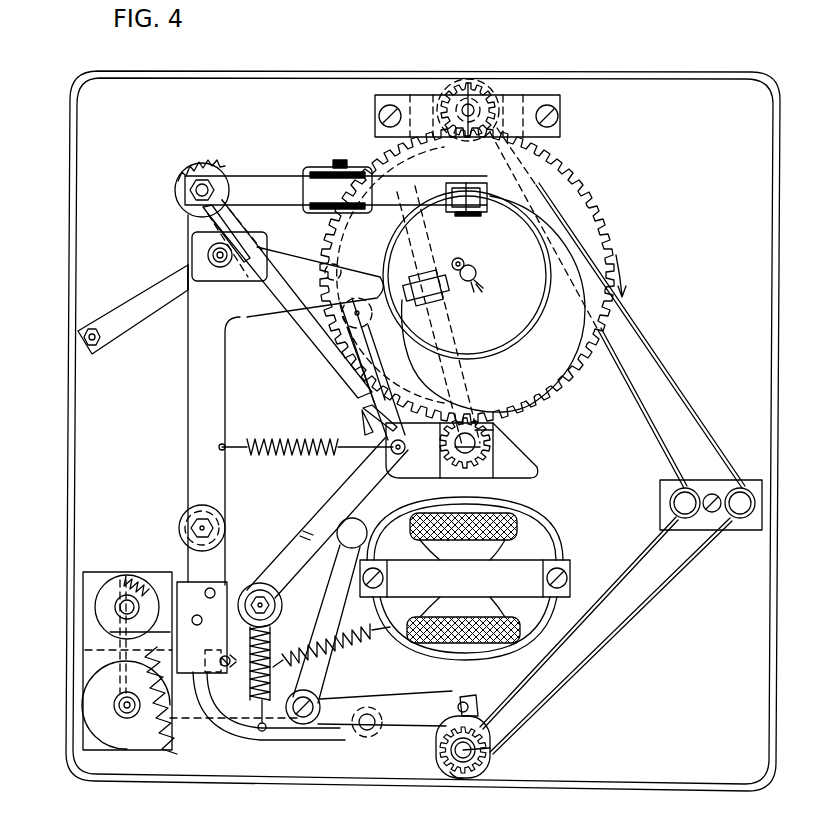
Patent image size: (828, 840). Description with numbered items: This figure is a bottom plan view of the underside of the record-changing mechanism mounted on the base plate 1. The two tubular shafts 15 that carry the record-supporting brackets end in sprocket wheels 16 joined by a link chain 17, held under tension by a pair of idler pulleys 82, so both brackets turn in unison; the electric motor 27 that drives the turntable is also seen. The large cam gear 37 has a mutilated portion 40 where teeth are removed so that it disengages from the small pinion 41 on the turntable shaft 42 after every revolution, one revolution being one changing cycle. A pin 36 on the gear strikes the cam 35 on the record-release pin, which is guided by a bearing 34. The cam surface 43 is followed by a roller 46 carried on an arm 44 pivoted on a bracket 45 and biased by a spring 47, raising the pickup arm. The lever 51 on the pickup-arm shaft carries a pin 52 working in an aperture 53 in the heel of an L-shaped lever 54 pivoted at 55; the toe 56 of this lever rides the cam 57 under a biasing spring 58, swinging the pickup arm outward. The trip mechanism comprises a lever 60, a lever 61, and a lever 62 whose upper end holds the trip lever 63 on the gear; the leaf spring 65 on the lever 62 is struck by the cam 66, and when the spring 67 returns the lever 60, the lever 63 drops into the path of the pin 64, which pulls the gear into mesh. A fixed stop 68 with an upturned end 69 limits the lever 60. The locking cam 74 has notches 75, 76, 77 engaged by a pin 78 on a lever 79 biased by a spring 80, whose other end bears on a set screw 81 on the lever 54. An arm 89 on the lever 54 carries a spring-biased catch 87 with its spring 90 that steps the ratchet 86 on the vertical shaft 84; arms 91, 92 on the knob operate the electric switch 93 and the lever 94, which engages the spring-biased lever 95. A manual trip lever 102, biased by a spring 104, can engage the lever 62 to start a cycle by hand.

The base plate 1 is at (612, 787).
The tubular shaft 15 is at (478, 757).
The sprocket wheel 16 is at (472, 85).
The link chain 17 is at (590, 656).
The electric motor 27 is at (540, 535).
The bearing 34 is at (540, 95).
The cam 35 is at (452, 88).
The pin 36 is at (325, 250).
The cam gear 37 is at (585, 182).
The mutilated portion 40 is at (482, 422).
The pinion 41 is at (493, 430).
The shaft 42 is at (480, 447).
The cam surface 43 is at (518, 212).
The arm 44 is at (252, 178).
The bracket 45 is at (300, 176).
The roller 46 is at (455, 183).
The spring 47 is at (338, 160).
The lever 51 is at (212, 226).
The pin 52 is at (238, 250).
The aperture 53 is at (205, 265).
The L-shaped lever 54 is at (190, 405).
The pivot 55 is at (190, 520).
The toe 56 is at (370, 282).
The cam 57 is at (362, 398).
The biasing spring 58 is at (296, 440).
The lever 60 is at (235, 318).
The lever 61 is at (325, 350).
The lever 62 is at (350, 372).
The trip lever 63 is at (472, 290).
The pin 64 is at (530, 478).
The leaf spring 65 is at (395, 458).
The cam 66 is at (440, 408).
The spring 67 is at (215, 162).
The fixed stop 68 is at (140, 300).
The upturned end 69 is at (183, 293).
The locking cam 74 is at (455, 778).
The notch 75 is at (478, 720).
The notch 76 is at (438, 748).
The notch 77 is at (490, 750).
The pin 78 is at (458, 703).
The lever 79 is at (350, 738).
The spring 80 is at (272, 650).
The set screw 81 is at (228, 655).
The idler pulley 82 is at (670, 508).
The vertical shaft 84 is at (112, 706).
The ratchet 86 is at (107, 735).
The spring-biased catch 87 is at (110, 632).
The arm 89 is at (183, 583).
The spring 90 is at (128, 572).
The arm 91 is at (100, 663).
The arm 92 is at (165, 742).
The electric switch 93 is at (108, 598).
The lever 94 is at (215, 745).
The spring-biased lever 95 is at (352, 533).
The manual trip lever 102 is at (328, 500).
The spring 104 is at (340, 650).